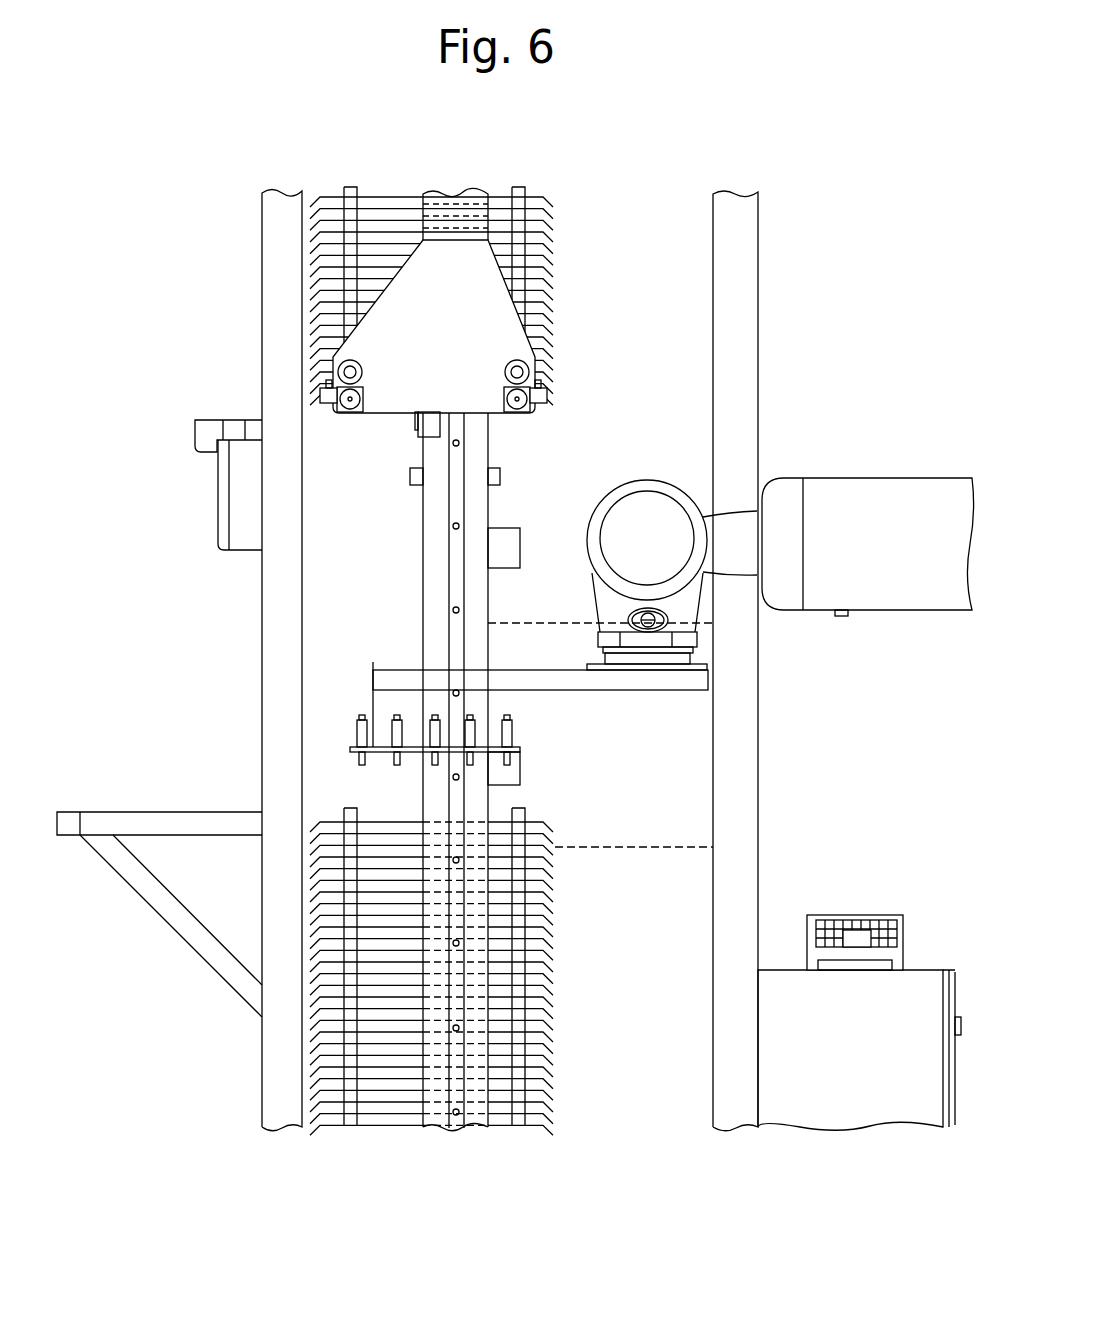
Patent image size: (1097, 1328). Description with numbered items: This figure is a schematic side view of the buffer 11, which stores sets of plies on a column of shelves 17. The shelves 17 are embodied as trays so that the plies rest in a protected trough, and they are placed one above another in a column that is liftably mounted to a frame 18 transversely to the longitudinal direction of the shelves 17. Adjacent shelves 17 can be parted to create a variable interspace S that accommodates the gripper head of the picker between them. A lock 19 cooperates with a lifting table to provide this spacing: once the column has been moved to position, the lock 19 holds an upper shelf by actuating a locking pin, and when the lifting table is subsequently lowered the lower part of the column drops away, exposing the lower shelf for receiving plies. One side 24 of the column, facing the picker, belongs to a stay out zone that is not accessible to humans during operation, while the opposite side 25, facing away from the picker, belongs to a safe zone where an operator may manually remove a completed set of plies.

The buffer 11 is at (515, 682).
The shelves 17 is at (384, 1066).
The frame 18 is at (738, 345).
The lock 19 is at (525, 405).
The side of the column 24 is at (811, 737).
The opposite side of the column 25 is at (190, 611).
The interspace S is at (367, 567).